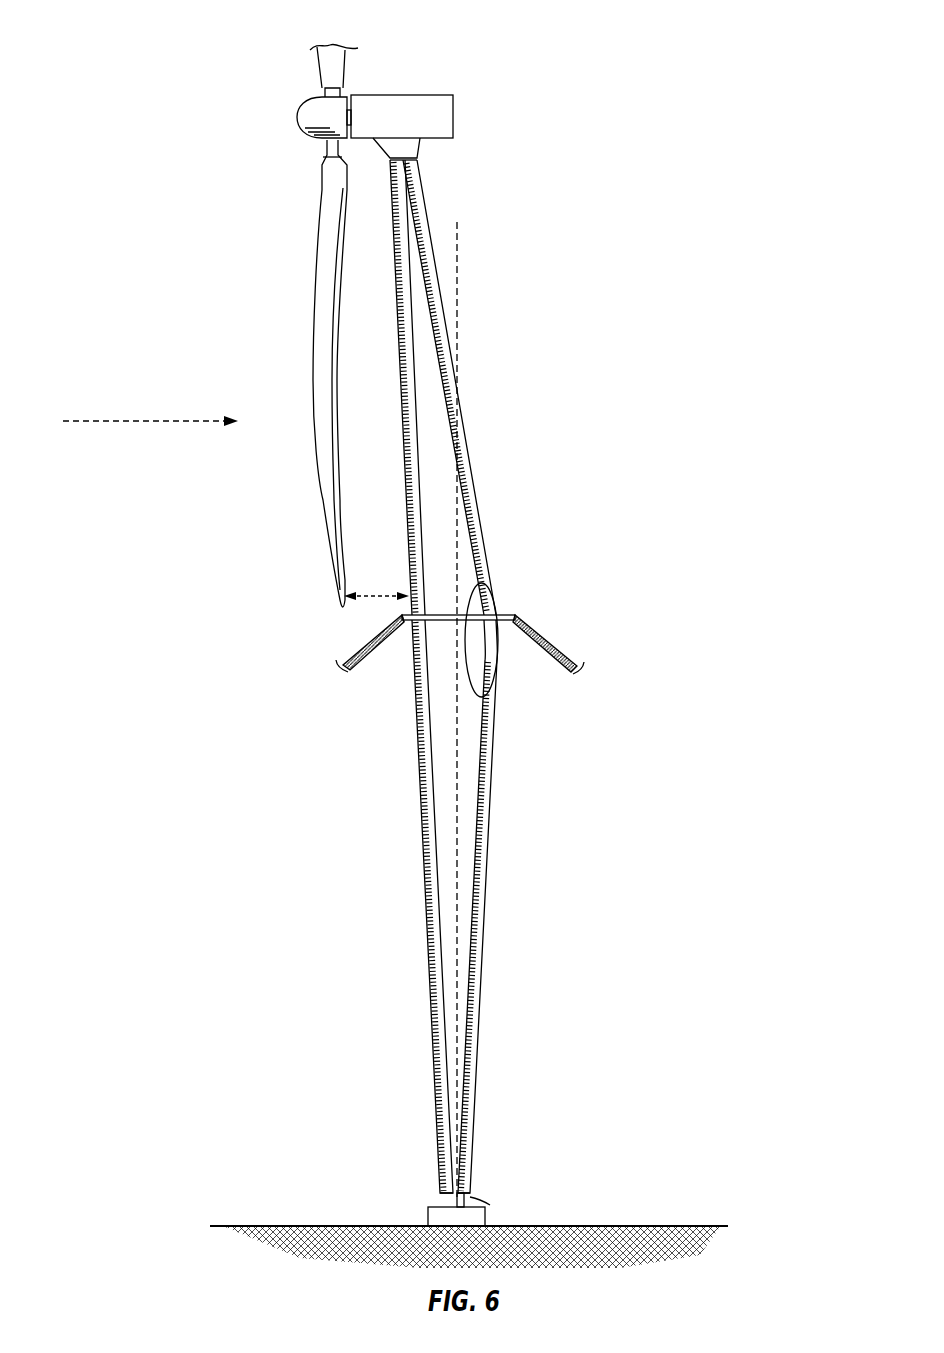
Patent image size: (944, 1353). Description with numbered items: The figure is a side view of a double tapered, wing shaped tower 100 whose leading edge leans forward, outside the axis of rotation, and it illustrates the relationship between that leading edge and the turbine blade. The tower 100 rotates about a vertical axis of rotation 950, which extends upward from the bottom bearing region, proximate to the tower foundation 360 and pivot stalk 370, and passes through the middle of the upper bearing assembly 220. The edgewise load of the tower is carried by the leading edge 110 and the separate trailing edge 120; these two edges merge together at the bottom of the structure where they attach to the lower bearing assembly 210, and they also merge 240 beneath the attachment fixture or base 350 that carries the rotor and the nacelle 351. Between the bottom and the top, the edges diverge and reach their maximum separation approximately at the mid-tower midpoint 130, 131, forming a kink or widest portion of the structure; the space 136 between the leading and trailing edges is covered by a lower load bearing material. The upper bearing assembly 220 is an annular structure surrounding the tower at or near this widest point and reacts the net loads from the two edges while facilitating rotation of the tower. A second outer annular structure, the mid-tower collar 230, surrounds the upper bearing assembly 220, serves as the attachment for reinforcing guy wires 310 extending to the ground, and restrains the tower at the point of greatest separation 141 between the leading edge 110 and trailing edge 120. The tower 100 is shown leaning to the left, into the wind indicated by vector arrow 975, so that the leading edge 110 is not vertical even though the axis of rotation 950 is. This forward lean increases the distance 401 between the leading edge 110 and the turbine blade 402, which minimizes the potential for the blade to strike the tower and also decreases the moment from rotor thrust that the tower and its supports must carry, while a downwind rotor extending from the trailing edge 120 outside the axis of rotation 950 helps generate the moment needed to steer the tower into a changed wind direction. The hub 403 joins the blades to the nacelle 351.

The tower 100 is at (466, 262).
The leading edge 110 is at (490, 830).
The trailing edge 120 is at (422, 843).
The midpoint 130 is at (497, 603).
The midpoint 131 is at (410, 578).
The space 136 is at (438, 652).
The point of greatest separation 141 is at (485, 676).
The lower bearing assembly 210 is at (468, 1200).
The upper bearing assembly 220 is at (487, 568).
The mid-tower collar 230 is at (398, 617).
The merge 240 is at (402, 162).
The guy wires 310 is at (542, 640).
The attachment fixture or base 350 is at (418, 143).
The nacelle 351 is at (442, 112).
The foundation 360 is at (428, 1220).
The pivot stalk 370 is at (440, 1202).
The distance 401 is at (375, 590).
The turbine blade 402 is at (320, 508).
The hub 403 is at (297, 115).
The vertical axis of rotation 950 is at (458, 326).
The vector arrow 975 is at (143, 421).